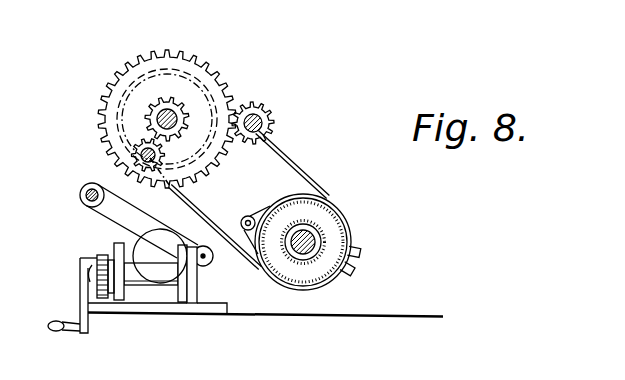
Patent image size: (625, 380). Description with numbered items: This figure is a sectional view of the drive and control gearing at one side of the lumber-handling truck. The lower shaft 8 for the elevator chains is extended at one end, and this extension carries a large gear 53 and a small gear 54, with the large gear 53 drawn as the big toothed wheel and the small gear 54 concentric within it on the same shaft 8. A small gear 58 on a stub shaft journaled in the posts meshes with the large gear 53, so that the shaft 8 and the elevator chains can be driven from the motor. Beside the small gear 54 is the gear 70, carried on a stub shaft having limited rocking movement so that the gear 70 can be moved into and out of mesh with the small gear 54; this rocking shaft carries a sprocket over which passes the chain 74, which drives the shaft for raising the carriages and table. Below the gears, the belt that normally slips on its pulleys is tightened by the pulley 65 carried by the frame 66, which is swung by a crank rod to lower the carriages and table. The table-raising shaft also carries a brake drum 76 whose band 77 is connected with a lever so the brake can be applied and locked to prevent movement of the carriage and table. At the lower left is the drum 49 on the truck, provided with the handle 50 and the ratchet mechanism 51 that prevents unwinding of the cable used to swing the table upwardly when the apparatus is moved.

The shaft 8 is at (148, 117).
The drum 49 is at (163, 272).
The handle 50 is at (62, 332).
The ratchet mechanism 51 is at (97, 278).
The large gear 53 is at (195, 67).
The small gear 54 is at (181, 108).
The small gear 58 is at (261, 117).
The pulley 65 is at (208, 276).
The frame 66 is at (147, 229).
The gear 70 is at (137, 153).
The chain 74 is at (312, 240).
The brake drum 76 is at (337, 226).
The band 77 is at (277, 283).